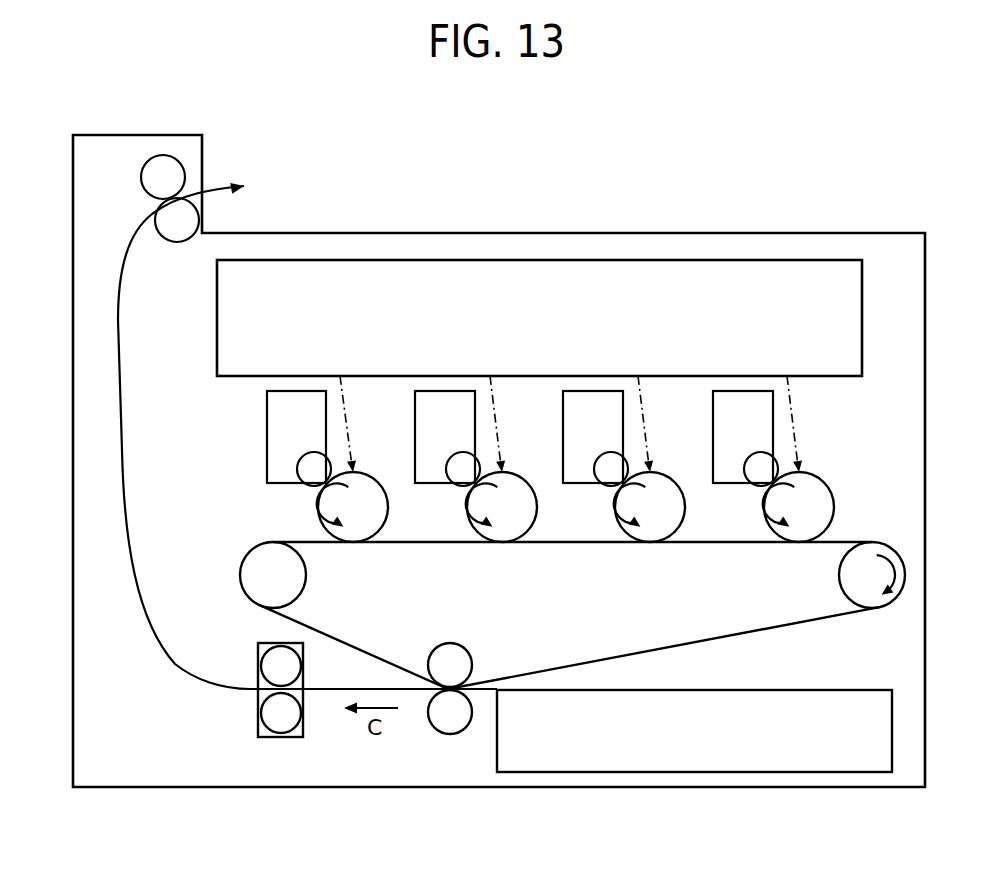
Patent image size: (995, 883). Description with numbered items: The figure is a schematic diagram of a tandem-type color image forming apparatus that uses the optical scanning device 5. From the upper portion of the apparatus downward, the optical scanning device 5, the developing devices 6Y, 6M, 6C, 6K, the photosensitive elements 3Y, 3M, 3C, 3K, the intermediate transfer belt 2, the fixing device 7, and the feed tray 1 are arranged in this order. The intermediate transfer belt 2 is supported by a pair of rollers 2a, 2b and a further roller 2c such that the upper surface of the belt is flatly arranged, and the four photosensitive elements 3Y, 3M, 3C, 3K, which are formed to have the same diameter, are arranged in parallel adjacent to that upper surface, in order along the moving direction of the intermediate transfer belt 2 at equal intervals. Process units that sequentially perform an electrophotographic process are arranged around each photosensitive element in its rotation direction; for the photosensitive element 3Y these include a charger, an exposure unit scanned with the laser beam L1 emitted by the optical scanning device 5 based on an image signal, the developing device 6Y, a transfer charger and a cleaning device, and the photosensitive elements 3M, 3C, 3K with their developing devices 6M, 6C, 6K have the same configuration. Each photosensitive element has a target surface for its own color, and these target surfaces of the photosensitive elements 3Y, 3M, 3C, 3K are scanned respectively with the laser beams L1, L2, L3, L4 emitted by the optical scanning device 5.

The feed tray 1 is at (856, 700).
The intermediate transfer belt 2 is at (777, 630).
The roller 2a is at (294, 578).
The roller 2b is at (840, 575).
The roller 2c is at (451, 654).
The photosensitive element 3Y is at (318, 508).
The photosensitive element 3M is at (467, 508).
The photosensitive element 3C is at (615, 508).
The photosensitive element 3K is at (764, 508).
The optical scanning device 5 is at (230, 318).
The developing device 6Y is at (268, 428).
The developing device 6M is at (416, 428).
The developing device 6C is at (564, 428).
The developing device 6K is at (714, 428).
The fixing device 7 is at (258, 723).
The laser beam L1 is at (348, 405).
The laser beam L2 is at (496, 405).
The laser beam L3 is at (645, 405).
The laser beam L4 is at (795, 405).